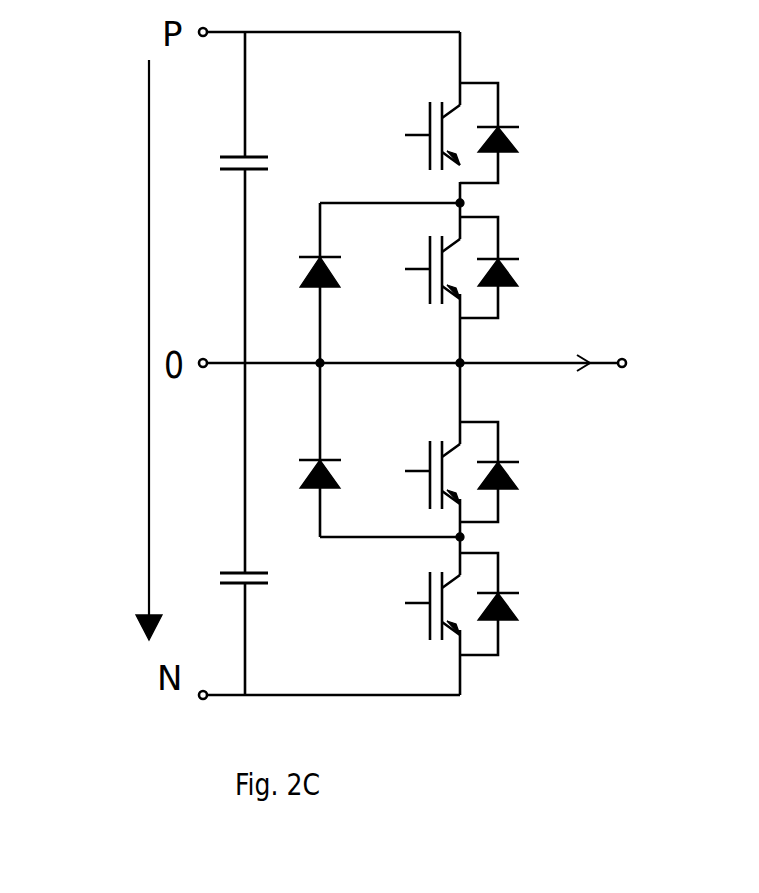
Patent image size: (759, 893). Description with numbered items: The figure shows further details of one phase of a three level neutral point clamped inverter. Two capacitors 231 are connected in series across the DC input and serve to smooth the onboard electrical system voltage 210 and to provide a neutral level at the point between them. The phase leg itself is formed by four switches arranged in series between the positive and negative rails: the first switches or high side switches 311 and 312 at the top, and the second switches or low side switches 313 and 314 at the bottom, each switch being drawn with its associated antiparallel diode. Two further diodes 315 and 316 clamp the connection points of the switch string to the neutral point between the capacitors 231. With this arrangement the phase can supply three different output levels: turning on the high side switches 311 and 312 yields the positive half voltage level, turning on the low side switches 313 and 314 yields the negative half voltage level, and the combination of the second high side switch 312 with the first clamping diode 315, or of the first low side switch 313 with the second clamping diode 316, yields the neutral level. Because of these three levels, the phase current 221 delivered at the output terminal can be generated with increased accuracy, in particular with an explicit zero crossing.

The onboard electrical system voltage 210 is at (147, 333).
The phase current 221 is at (592, 372).
The capacitors 231 is at (267, 163).
The high side switch T1 311 is at (547, 143).
The high side switch T2 312 is at (542, 273).
The low side switch T3 313 is at (525, 490).
The low side switch T4 314 is at (507, 622).
The clamping diode D5 315 is at (308, 262).
The clamping diode D6 316 is at (310, 462).